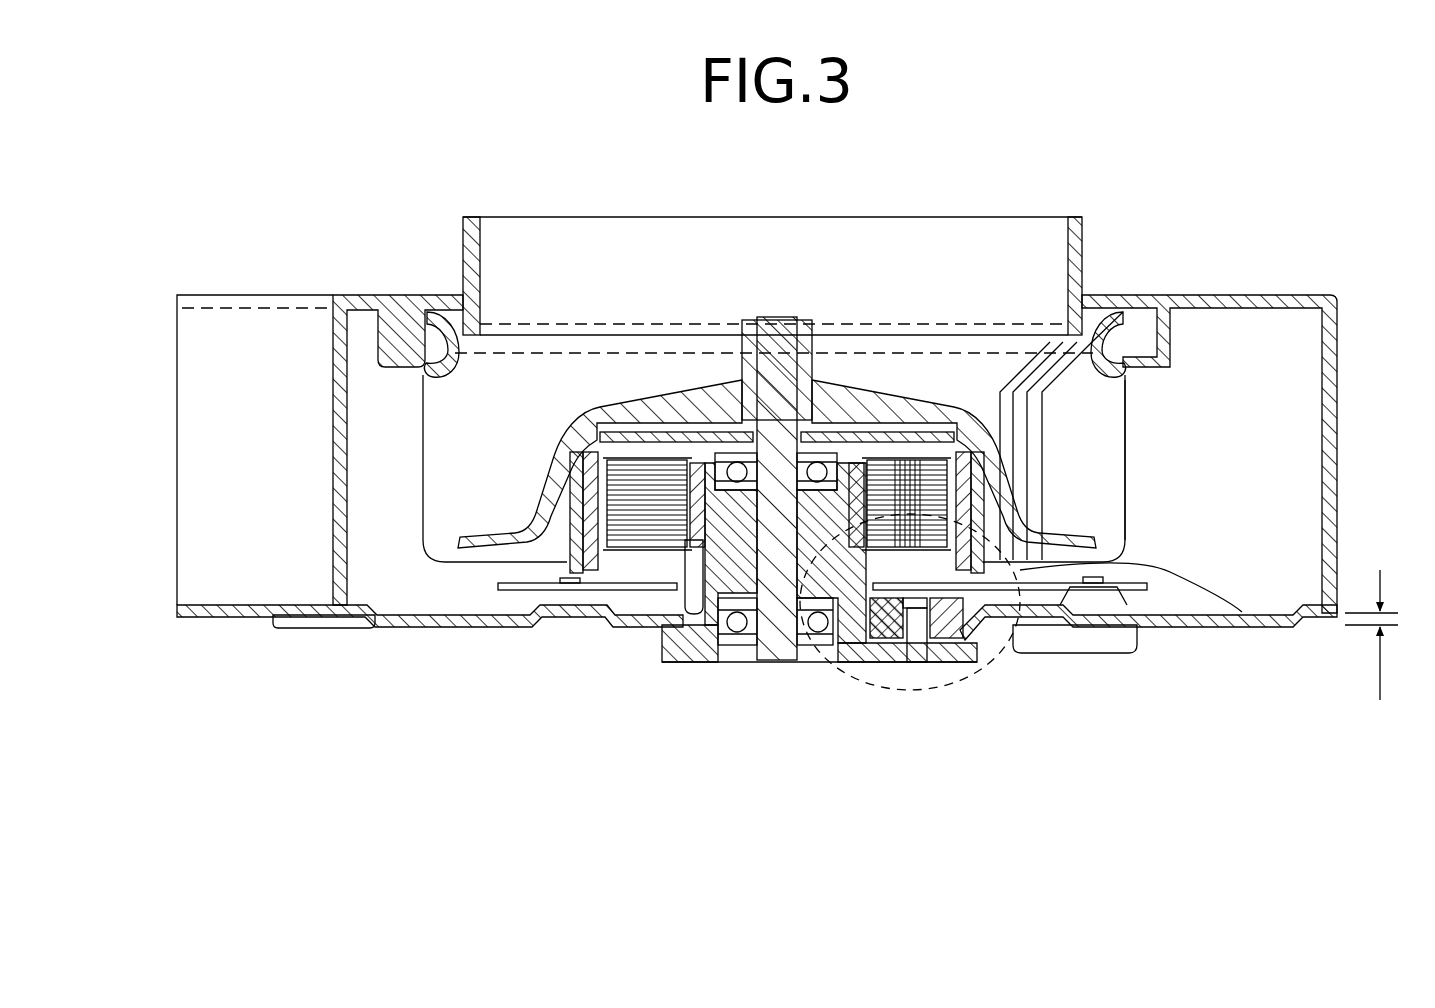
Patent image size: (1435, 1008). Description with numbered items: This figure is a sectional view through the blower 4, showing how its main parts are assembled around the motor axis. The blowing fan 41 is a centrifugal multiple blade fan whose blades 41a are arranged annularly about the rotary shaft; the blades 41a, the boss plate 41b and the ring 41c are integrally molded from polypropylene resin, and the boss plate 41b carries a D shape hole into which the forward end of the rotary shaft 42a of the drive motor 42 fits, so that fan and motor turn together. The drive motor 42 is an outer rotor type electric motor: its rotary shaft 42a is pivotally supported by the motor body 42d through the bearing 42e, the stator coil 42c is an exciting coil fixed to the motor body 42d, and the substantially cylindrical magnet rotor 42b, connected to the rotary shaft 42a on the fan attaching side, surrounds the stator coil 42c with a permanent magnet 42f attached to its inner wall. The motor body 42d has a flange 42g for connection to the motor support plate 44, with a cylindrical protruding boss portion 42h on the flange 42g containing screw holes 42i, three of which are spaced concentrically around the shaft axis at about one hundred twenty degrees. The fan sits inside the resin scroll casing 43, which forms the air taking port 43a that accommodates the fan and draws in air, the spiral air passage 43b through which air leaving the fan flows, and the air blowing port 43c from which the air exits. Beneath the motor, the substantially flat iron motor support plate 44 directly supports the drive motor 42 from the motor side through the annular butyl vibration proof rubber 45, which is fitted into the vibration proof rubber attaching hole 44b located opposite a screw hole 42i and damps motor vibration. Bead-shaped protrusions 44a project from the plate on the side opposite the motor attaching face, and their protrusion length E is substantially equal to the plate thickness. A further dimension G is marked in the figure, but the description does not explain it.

The blower 4 is at (1174, 214).
The blowing fan 41 is at (1142, 466).
The blade 41a is at (1098, 500).
The boss plate 41b is at (965, 388).
The ring 41c is at (1127, 430).
The drive motor 42 is at (793, 666).
The rotary shaft 42a is at (778, 330).
The magnet rotor 42b is at (567, 522).
The stator coil 42c is at (592, 557).
The motor body 42d is at (695, 653).
The bearing 42e is at (723, 632).
The permanent magnet 42f is at (582, 623).
The flange 42g is at (967, 635).
The boss portion 42h is at (903, 662).
The screw hole 42i is at (913, 660).
The scroll casing 43 is at (1290, 300).
The air taking port 43a is at (903, 270).
The air passage 43b is at (1253, 538).
The air blowing port 43c is at (198, 408).
The motor support plate 44 is at (193, 620).
The protrusion 44a is at (297, 627).
The vibration proof rubber attaching hole 44b is at (1070, 657).
The vibration proof rubber 45 is at (977, 630).
The gap G is at (1253, 623).
The protrusion length E is at (1374, 635).